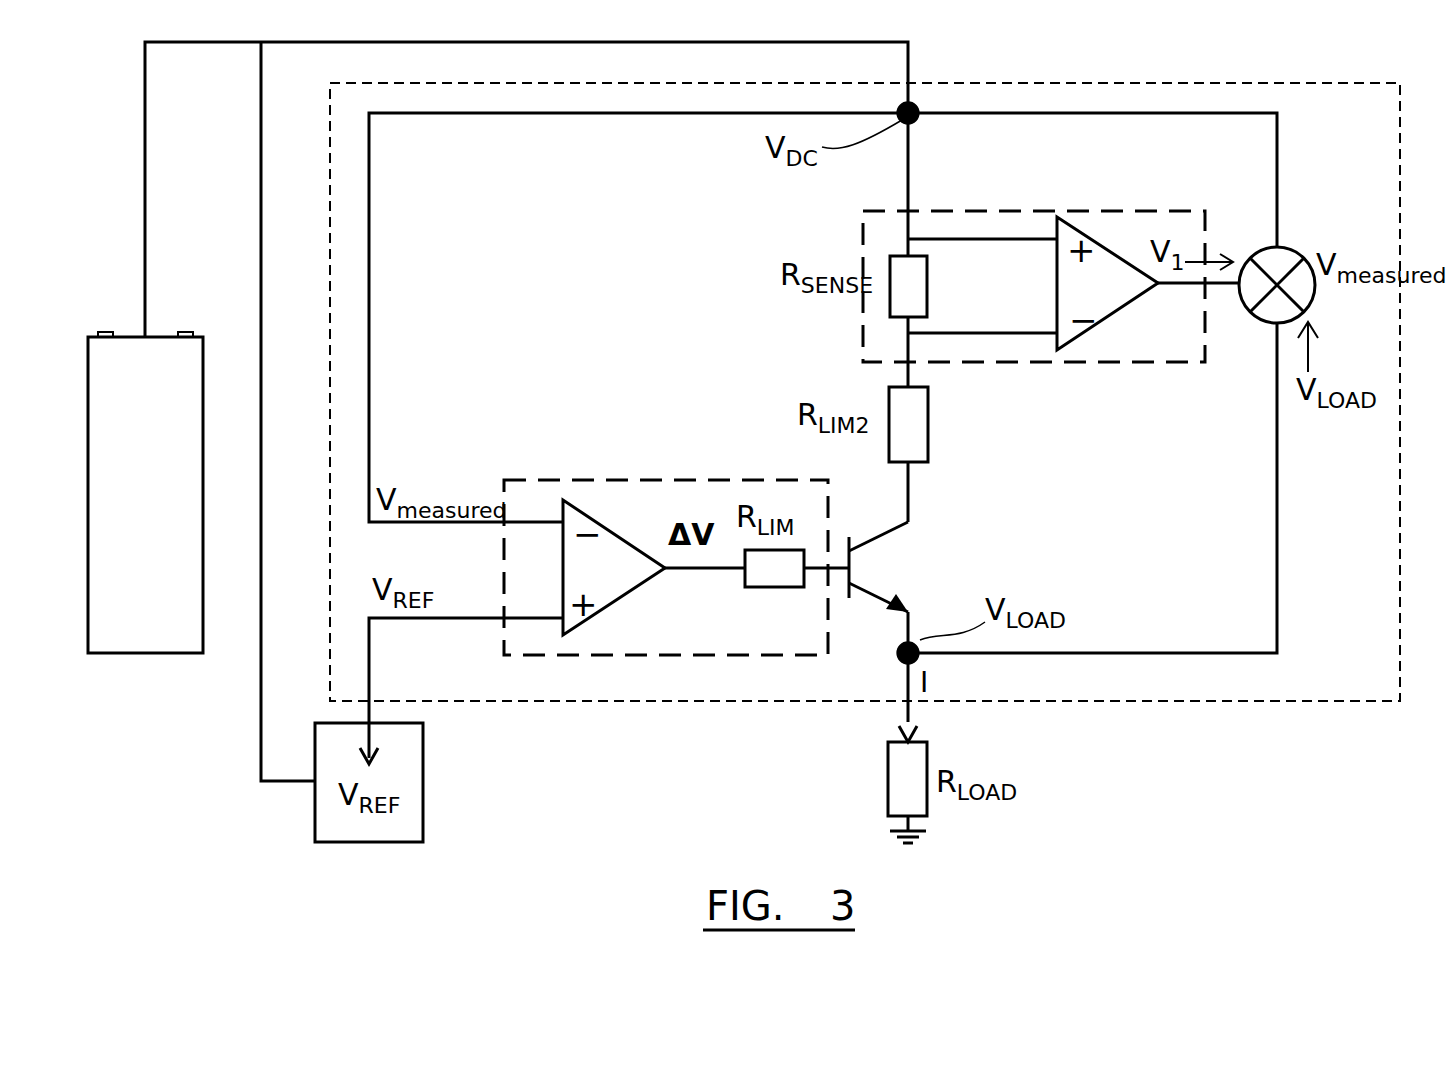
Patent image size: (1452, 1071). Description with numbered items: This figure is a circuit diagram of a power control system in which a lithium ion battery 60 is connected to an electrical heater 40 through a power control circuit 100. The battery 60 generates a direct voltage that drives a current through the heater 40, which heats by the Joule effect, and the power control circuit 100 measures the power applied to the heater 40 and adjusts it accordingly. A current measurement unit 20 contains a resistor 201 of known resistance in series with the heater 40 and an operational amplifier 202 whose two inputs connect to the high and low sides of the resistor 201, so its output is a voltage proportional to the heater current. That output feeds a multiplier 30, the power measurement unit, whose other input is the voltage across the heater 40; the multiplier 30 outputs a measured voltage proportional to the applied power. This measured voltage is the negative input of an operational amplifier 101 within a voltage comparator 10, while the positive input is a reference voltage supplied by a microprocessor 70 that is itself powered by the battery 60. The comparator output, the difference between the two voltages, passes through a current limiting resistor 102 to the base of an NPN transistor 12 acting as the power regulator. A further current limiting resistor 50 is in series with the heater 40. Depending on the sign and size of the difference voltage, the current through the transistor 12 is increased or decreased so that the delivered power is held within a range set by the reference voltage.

The voltage comparator 10 is at (636, 480).
The NPN transistor 12 is at (895, 572).
The current measurement unit 20 is at (998, 211).
The multiplier 30 is at (1293, 250).
The electrical heater 40 is at (927, 803).
The current limiting resistor 50 is at (928, 420).
The lithium ion battery 60 is at (145, 655).
The microprocessor 70 is at (423, 780).
The power control circuit 100 is at (1266, 703).
The operational amplifier 101 is at (617, 600).
The current limiting resistor 102 is at (782, 587).
The resistor 201 is at (890, 262).
The operational amplifier 202 is at (1112, 320).